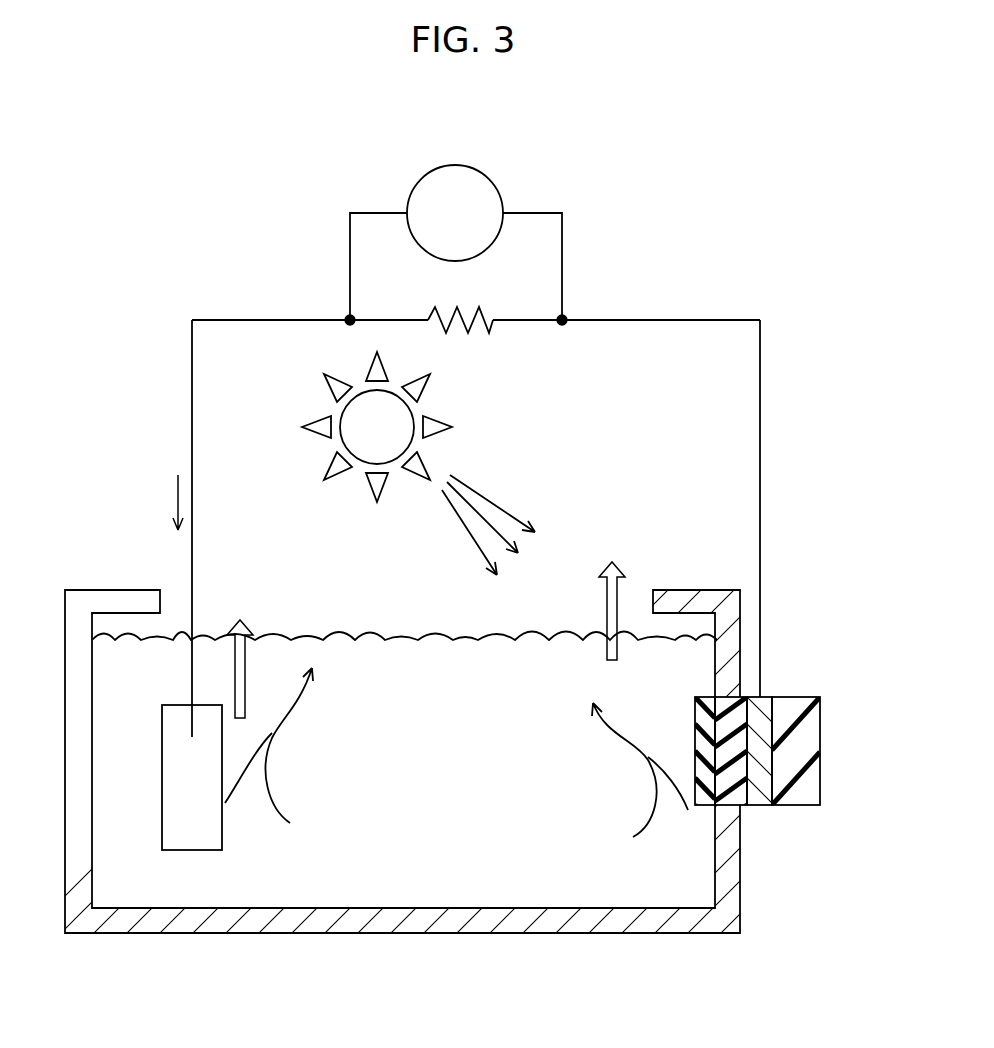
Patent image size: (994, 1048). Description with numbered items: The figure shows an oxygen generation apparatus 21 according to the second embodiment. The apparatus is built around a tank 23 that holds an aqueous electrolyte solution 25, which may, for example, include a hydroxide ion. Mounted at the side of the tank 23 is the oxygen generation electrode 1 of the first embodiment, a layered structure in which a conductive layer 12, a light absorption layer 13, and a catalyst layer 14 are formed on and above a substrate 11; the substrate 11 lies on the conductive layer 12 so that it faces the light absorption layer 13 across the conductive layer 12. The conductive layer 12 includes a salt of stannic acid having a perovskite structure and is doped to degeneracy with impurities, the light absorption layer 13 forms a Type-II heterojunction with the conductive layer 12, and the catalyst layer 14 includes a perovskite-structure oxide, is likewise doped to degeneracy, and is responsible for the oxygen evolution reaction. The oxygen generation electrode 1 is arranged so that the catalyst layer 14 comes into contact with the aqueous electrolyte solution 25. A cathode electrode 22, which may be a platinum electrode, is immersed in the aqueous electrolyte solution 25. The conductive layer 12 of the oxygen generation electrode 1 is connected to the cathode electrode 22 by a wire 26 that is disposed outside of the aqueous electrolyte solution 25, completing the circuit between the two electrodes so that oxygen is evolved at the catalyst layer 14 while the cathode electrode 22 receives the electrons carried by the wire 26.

The oxygen generation electrode 1 is at (835, 660).
The substrate 11 is at (807, 752).
The conductive layer 12 is at (758, 782).
The light absorption layer 13 is at (737, 790).
The catalyst layer 14 is at (703, 793).
The oxygen generation apparatus 21 is at (654, 161).
The cathode electrode 22 is at (190, 852).
The tank 23 is at (627, 922).
The aqueous electrolyte solution 25 is at (468, 875).
The wire 26 is at (192, 393).